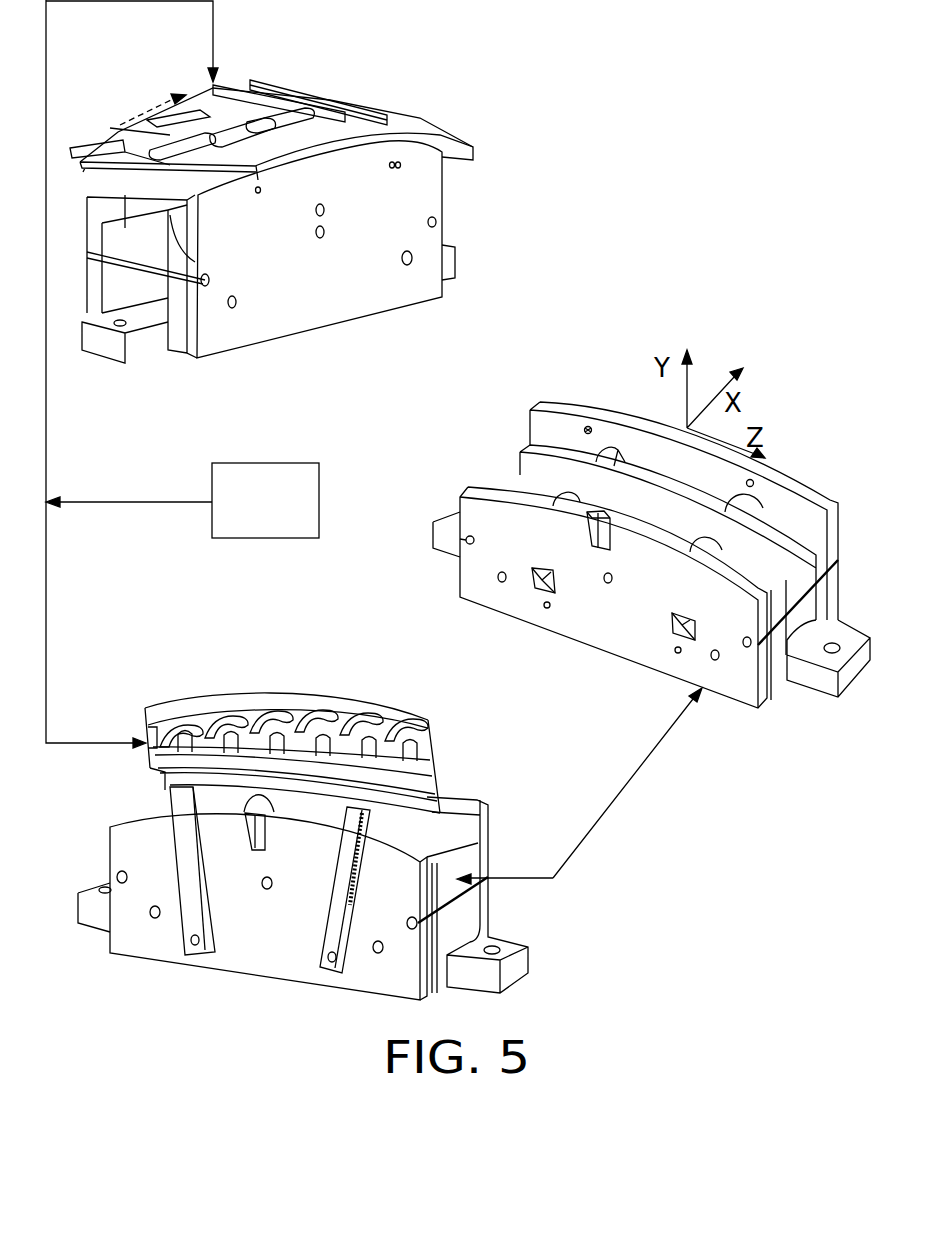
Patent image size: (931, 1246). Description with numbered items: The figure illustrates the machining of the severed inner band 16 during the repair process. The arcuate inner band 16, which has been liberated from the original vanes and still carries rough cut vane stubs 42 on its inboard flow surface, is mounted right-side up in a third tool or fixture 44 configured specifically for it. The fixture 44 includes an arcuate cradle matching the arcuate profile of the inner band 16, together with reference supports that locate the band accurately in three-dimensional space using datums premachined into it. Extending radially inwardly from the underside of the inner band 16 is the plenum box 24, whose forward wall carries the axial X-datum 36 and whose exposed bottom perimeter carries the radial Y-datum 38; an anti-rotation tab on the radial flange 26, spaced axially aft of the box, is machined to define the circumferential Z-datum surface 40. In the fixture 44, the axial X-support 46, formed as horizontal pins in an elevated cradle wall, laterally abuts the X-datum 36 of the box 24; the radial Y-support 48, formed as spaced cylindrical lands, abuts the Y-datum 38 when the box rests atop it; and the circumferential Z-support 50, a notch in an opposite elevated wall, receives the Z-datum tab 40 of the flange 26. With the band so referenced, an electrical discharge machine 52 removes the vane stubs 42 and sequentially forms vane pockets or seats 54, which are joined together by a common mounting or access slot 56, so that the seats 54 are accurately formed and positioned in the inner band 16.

The inner band 16 is at (443, 138).
The plenum box 24 is at (150, 205).
The radial flange 26 is at (153, 768).
The axial X-datum 36 is at (185, 190).
The radial Y-datum 38 is at (175, 247).
The circumferential Z-datum surface 40 is at (273, 807).
The vane stubs 42 is at (325, 95).
The third tool or fixture 44 is at (452, 186).
The axial X-support 46 is at (580, 428).
The radial Y-support 48 is at (707, 538).
The circumferential Z-support 50 is at (250, 843).
The electrical discharge machine 52 is at (300, 463).
The vane pockets or seats 54 is at (213, 100).
The mounting or access slot 56 is at (115, 155).